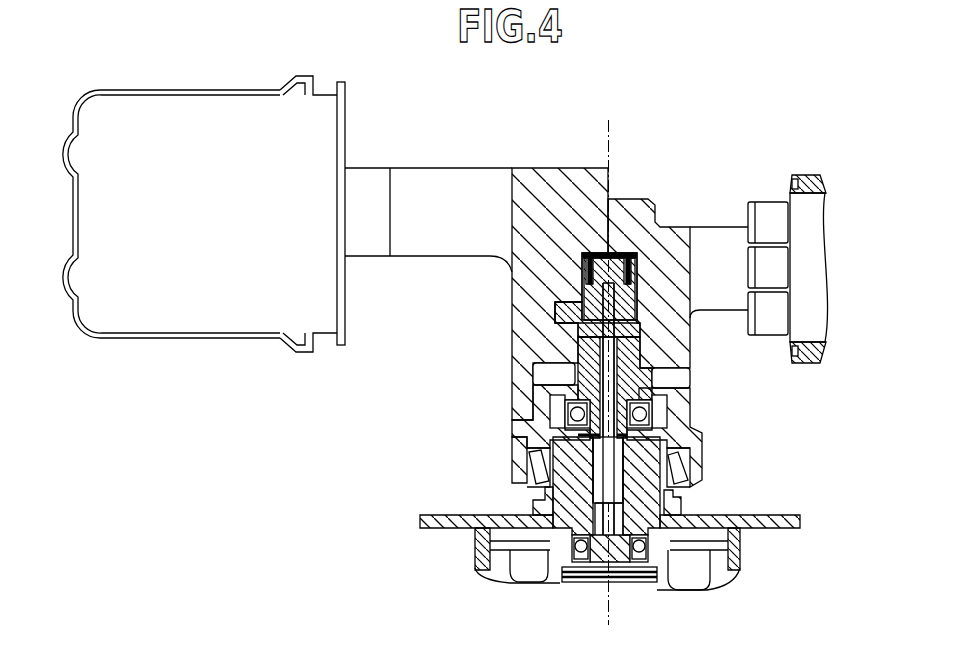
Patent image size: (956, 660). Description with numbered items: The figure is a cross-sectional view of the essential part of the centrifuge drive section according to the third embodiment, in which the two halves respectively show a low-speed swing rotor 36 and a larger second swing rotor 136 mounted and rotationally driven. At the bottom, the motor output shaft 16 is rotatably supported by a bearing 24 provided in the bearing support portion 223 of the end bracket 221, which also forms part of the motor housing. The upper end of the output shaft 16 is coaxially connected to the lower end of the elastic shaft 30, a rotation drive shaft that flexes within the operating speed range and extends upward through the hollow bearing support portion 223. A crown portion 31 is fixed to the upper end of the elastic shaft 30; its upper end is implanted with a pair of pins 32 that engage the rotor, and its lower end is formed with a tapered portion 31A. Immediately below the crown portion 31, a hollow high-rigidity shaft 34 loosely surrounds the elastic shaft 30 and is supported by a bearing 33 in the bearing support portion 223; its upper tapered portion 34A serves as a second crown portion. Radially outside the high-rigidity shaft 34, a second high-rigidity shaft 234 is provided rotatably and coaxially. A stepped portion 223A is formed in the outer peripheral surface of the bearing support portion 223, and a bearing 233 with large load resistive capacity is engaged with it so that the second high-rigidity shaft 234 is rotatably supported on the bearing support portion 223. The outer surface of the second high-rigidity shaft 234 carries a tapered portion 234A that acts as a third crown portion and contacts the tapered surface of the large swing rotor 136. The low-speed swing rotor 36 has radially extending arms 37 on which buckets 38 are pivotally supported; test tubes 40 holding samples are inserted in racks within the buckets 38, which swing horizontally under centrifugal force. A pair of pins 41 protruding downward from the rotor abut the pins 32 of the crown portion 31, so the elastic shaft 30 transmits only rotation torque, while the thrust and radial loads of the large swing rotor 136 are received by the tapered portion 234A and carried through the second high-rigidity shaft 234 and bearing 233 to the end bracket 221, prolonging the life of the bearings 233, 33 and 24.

The second swing rotor 136 is at (562, 193).
The pins 41 is at (625, 250).
The arms 37 is at (650, 200).
The low-speed swing rotor 36 is at (708, 212).
The test tubes 40 is at (771, 210).
The buckets 38 is at (810, 176).
The pins 32 is at (590, 268).
The tapered portion 31A is at (588, 321).
The crown portion 31 is at (575, 332).
The tapered portion 34A is at (575, 357).
The elastic shaft 30 is at (612, 330).
The high-rigidity shaft 34 is at (637, 373).
The tapered portion 234A is at (693, 410).
The bearing 33 is at (697, 425).
The second high-rigidity shaft 234 is at (533, 427).
The bearing 233 is at (530, 468).
The stepped portion 223A is at (700, 490).
The bearing support portion 223 is at (567, 502).
The end bracket 221 is at (683, 505).
The bearing 24 is at (573, 550).
The output shaft 16 is at (598, 520).